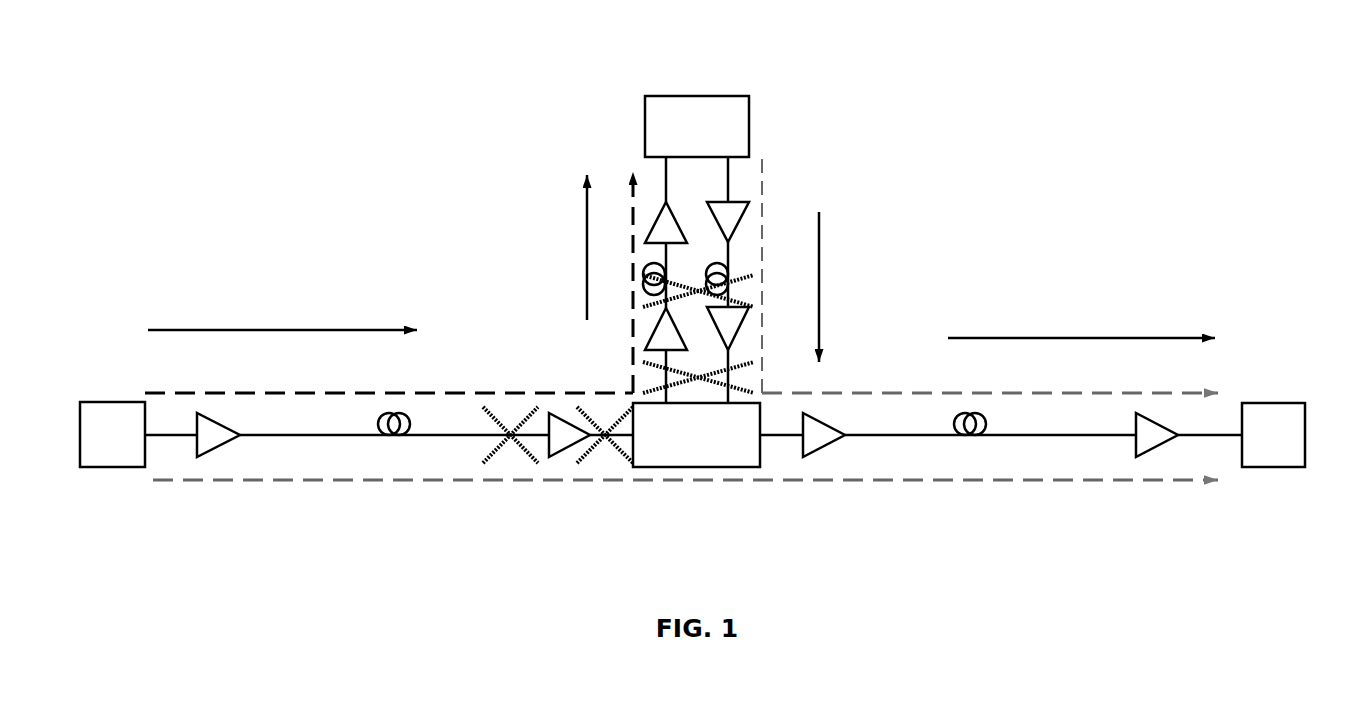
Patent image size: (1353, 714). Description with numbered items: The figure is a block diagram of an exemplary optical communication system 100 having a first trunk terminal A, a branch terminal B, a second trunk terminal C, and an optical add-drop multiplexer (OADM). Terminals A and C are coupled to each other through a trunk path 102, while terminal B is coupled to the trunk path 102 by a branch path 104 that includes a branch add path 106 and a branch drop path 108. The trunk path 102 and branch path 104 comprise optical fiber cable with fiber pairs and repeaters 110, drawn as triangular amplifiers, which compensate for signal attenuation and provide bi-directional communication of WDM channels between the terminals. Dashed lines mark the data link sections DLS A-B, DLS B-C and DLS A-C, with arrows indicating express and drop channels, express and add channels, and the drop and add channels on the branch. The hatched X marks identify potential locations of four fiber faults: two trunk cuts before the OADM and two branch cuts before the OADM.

The optical communication system 100 is at (955, 95).
The trunk path 102 is at (333, 455).
The branch path 104 is at (890, 228).
The branch add path 106 is at (735, 178).
The branch drop path 108 is at (658, 181).
The repeater 110 is at (219, 443).